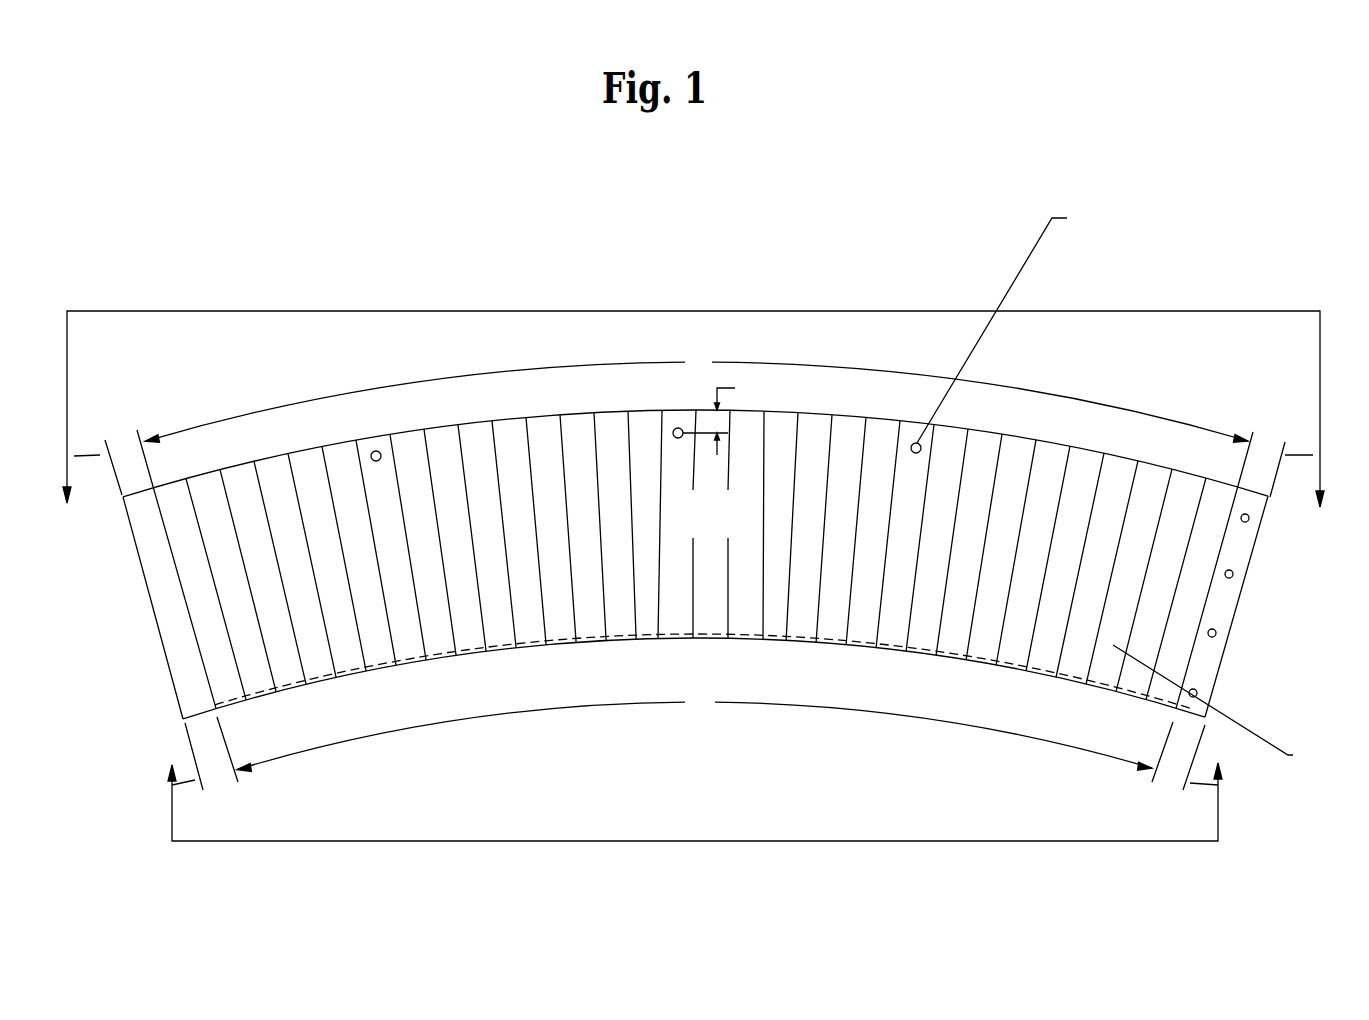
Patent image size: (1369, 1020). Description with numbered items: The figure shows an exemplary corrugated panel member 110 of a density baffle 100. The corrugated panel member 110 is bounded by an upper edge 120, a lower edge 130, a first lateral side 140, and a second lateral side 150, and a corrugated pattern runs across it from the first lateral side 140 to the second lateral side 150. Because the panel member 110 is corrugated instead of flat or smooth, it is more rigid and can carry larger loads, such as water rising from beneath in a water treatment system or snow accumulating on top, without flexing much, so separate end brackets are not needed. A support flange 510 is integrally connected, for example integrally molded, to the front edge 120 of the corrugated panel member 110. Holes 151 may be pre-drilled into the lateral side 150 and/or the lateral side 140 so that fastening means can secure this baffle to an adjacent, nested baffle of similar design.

The density baffle 100 is at (237, 265).
The corrugated panel member 110 is at (727, 529).
The upper edge 120 is at (465, 647).
The lower edge 130 is at (437, 425).
The first lateral side 140 is at (128, 585).
The second lateral side 150 is at (1245, 665).
The holes 151 is at (1250, 523).
The support flange 510 is at (830, 643).